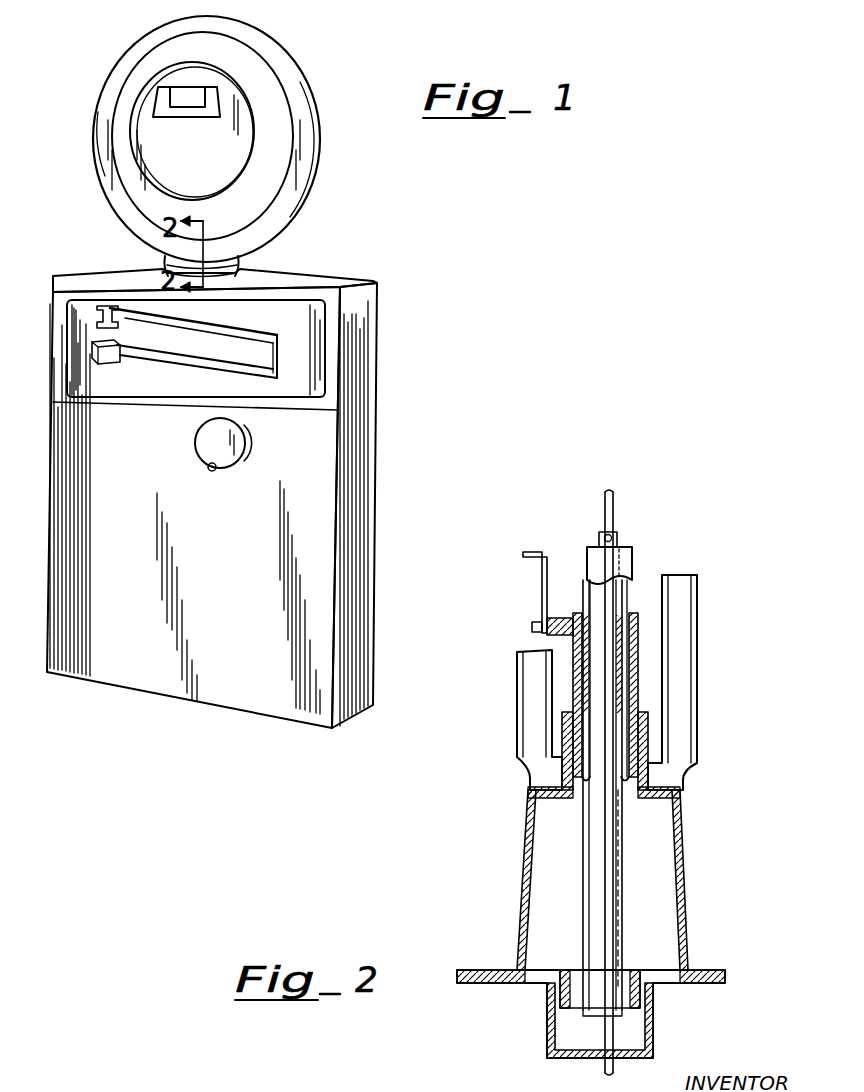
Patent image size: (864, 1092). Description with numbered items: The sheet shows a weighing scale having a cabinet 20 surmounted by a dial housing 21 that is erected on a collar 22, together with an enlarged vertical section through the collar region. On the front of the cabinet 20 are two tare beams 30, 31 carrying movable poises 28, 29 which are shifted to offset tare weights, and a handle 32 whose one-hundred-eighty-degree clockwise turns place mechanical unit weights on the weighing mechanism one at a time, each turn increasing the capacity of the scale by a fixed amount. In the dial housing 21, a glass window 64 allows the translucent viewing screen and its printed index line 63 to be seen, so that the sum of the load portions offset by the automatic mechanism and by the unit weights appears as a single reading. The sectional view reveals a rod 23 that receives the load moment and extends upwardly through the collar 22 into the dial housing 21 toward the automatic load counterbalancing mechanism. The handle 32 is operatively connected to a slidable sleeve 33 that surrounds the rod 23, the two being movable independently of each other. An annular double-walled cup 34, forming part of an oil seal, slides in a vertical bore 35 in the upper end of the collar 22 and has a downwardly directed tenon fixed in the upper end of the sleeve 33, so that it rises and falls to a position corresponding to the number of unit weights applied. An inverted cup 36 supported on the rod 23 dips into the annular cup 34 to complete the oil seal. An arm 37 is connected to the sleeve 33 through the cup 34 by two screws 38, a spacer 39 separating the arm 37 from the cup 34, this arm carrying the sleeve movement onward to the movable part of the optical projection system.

In FIG. 1, the cabinet 20 is at (366, 426).
In FIG. 1, the dial housing 21 is at (298, 70).
In FIG. 2, the dial housing 21 is at (525, 773).
In FIG. 1, the collar 22 is at (245, 272).
In FIG. 2, the collar 22 is at (685, 896).
In FIG. 2, the rod 23 is at (615, 498).
In FIG. 1, the movable poise 28 is at (96, 318).
In FIG. 1, the movable poise 29 is at (105, 360).
In FIG. 1, the tare beam 30 is at (255, 332).
In FIG. 1, the tare beam 31 is at (216, 372).
In FIG. 1, the handle 32 is at (197, 446).
In FIG. 2, the slidable sleeve 33 is at (618, 900).
In FIG. 2, the annular double-walled cup 34 is at (638, 698).
In FIG. 2, the vertical bore 35 is at (648, 740).
In FIG. 2, the inverted cup 36 is at (630, 552).
In FIG. 2, the arm 37 is at (540, 588).
In FIG. 2, the screws 38 is at (532, 627).
In FIG. 2, the spacer 39 is at (560, 616).
In FIG. 1, the index line 63 is at (200, 98).
In FIG. 1, the glass window 64 is at (177, 96).